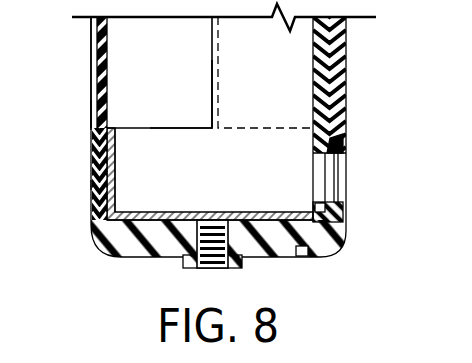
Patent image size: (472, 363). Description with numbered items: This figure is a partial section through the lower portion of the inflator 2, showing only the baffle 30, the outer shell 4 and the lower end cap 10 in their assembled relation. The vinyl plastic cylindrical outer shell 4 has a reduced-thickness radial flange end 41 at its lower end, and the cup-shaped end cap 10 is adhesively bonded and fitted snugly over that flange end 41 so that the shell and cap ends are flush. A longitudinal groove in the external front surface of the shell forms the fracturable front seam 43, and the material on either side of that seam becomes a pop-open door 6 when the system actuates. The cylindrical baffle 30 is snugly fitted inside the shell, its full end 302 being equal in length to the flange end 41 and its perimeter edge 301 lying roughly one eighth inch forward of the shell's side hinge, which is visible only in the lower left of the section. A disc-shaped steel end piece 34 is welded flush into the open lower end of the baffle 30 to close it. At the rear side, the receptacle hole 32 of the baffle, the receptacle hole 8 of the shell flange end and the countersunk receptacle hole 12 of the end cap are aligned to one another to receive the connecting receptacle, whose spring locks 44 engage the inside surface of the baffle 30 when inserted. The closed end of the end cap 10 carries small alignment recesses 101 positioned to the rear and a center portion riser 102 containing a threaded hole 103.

The inflator 2 is at (356, 53).
The outer shell 4 is at (80, 37).
The front seam 43 is at (97, 74).
The pop-open door 6 is at (92, 112).
The radial flange end 41 is at (364, 234).
The end cap 10 is at (81, 185).
The countersunk receptacle hole 12 is at (343, 165).
The receptacle hole 8 is at (333, 178).
The receptacle hole 32 is at (318, 186).
The center portion riser 102 is at (180, 258).
The threaded hole 103 is at (208, 275).
The alignment recess 101 is at (302, 262).
The baffle 30 is at (126, 142).
The perimeter edge 301 is at (197, 128).
The full end 302 is at (113, 155).
The end piece 34 is at (126, 200).
The spring lock 44 is at (218, 81).